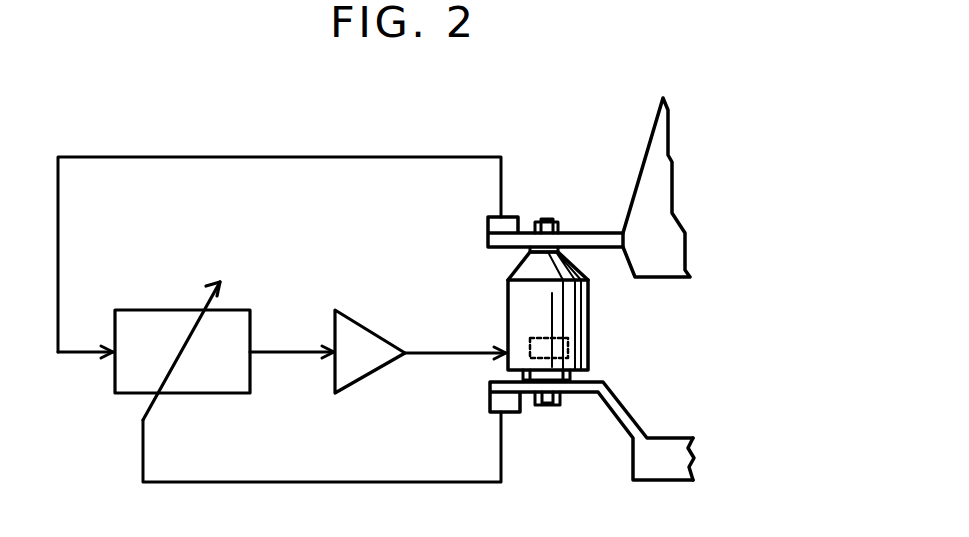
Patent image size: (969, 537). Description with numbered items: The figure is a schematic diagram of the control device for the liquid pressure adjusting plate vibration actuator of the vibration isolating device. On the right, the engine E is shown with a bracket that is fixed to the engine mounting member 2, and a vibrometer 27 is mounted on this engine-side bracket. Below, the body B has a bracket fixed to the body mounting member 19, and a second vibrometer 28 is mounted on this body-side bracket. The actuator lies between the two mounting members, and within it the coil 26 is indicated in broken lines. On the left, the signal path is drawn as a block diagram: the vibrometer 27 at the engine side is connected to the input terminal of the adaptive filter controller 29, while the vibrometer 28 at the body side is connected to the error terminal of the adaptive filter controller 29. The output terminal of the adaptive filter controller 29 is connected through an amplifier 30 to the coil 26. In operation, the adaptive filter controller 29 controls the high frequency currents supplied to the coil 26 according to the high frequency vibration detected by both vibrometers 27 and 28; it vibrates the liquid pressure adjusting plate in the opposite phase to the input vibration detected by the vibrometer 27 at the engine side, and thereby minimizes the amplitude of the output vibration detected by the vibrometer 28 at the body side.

The engine mounting member 2 is at (558, 253).
The body mounting member 19 is at (562, 382).
The coil 26 is at (568, 347).
The vibrometer 27 is at (485, 227).
The vibrometer 28 is at (490, 398).
The adaptive filter controller 29 is at (166, 310).
The amplifier 30 is at (347, 310).
The engine E is at (668, 141).
The body B is at (695, 470).